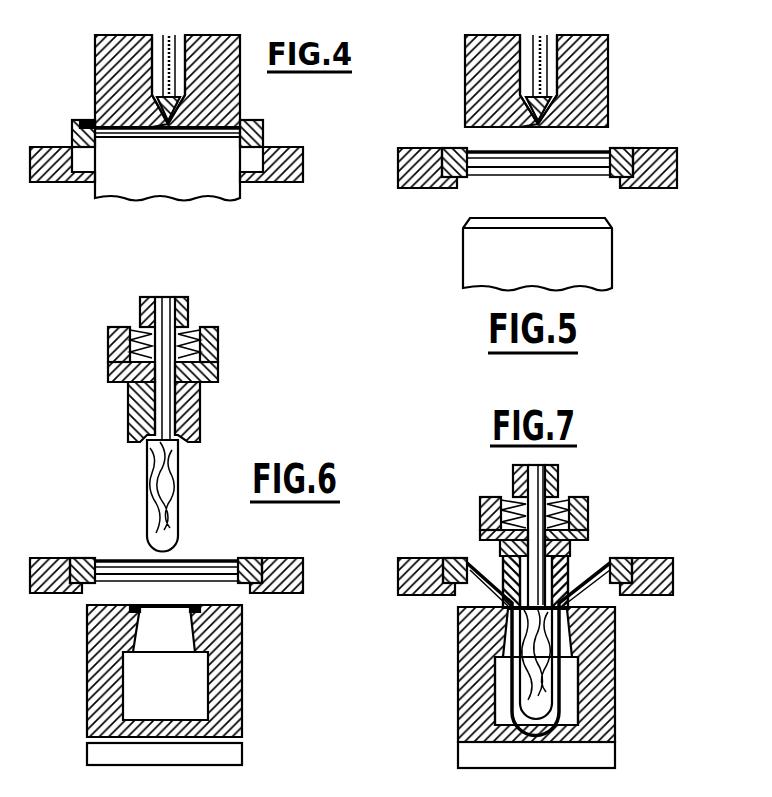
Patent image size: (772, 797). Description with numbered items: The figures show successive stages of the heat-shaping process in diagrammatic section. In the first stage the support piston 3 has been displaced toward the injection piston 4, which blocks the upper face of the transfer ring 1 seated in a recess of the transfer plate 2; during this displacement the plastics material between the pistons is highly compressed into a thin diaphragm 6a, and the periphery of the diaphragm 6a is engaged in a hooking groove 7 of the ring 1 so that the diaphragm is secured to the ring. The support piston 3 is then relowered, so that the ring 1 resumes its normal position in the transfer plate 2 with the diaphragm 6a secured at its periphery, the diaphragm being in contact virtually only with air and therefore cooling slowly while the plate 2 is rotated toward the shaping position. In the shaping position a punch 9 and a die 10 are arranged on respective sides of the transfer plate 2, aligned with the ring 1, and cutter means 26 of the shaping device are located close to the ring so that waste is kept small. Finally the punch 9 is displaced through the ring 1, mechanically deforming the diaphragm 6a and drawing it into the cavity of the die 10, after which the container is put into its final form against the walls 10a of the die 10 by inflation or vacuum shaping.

In FIG. 4, the transfer ring 1 is at (72, 134).
In FIG. 5, the transfer ring 1 is at (633, 152).
In FIG. 6, the transfer ring 1 is at (246, 559).
In FIG. 7, the transfer ring 1 is at (628, 565).
In FIG. 4, the transfer plate 2 is at (49, 182).
In FIG. 5, the transfer plate 2 is at (656, 177).
In FIG. 6, the transfer plate 2 is at (293, 558).
In FIG. 7, the transfer plate 2 is at (656, 594).
In FIG. 4, the support piston 3 is at (167, 164).
In FIG. 5, the support piston 3 is at (537, 254).
In FIG. 4, the injection piston 4 is at (105, 67).
In FIG. 5, the injection piston 4 is at (600, 96).
In FIG. 4, the diaphragm 6a is at (234, 127).
In FIG. 5, the diaphragm 6a is at (600, 150).
In FIG. 6, the diaphragm 6a is at (202, 558).
In FIG. 7, the diaphragm 6a is at (538, 649).
In FIG. 4, the hooking groove 7 is at (91, 121).
In FIG. 6, the punch 9 is at (177, 492).
In FIG. 7, the punch 9 is at (540, 668).
In FIG. 6, the die 10 is at (233, 680).
In FIG. 7, the die 10 is at (602, 713).
In FIG. 7, the walls of die 10a is at (578, 701).
In FIG. 6, the cutter means 26 is at (200, 413).
In FIG. 7, the cutter means 26 is at (576, 566).